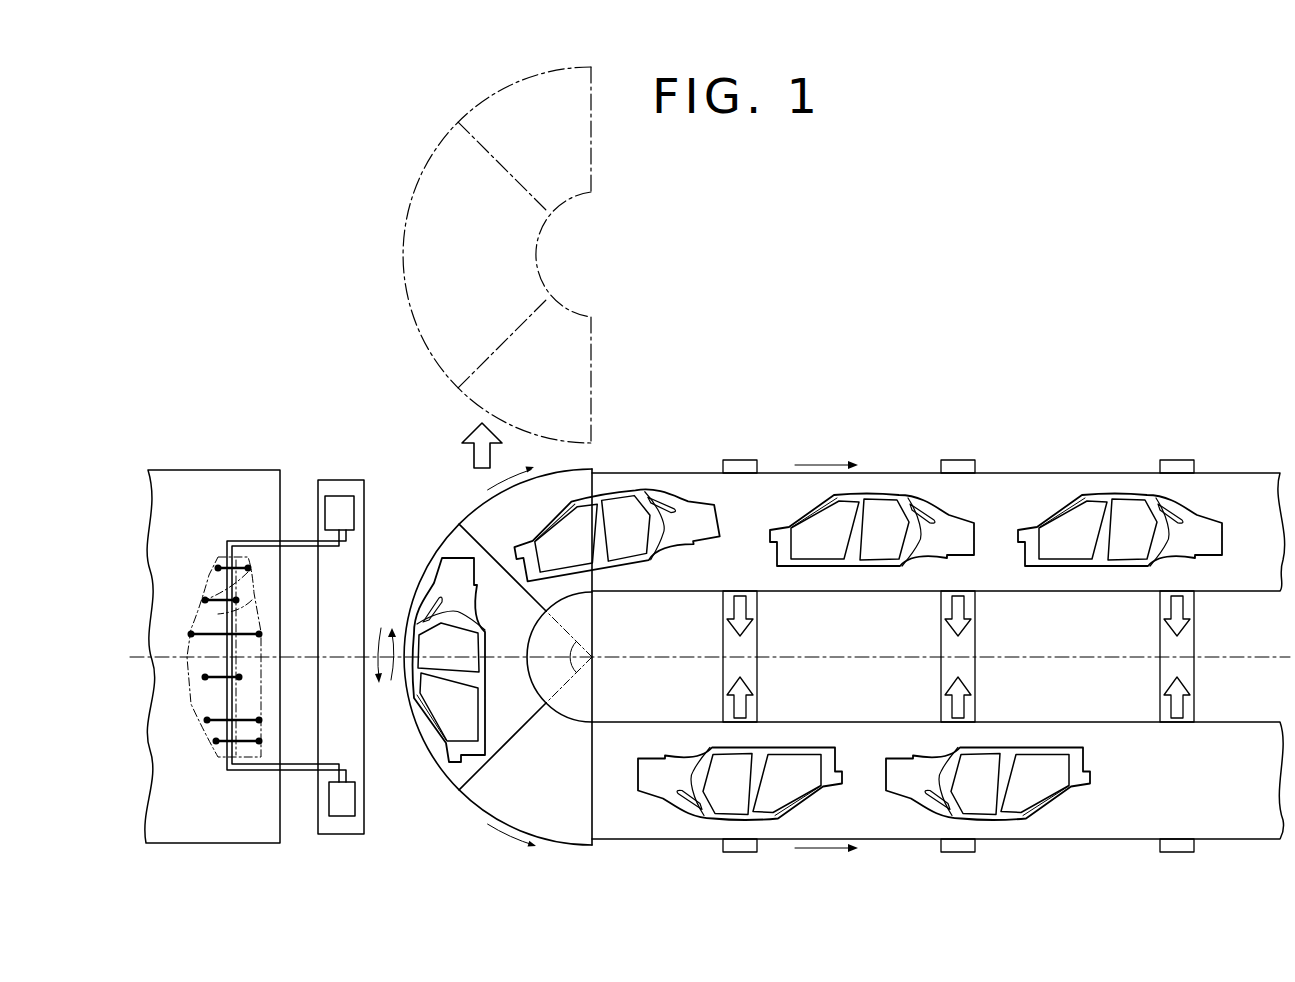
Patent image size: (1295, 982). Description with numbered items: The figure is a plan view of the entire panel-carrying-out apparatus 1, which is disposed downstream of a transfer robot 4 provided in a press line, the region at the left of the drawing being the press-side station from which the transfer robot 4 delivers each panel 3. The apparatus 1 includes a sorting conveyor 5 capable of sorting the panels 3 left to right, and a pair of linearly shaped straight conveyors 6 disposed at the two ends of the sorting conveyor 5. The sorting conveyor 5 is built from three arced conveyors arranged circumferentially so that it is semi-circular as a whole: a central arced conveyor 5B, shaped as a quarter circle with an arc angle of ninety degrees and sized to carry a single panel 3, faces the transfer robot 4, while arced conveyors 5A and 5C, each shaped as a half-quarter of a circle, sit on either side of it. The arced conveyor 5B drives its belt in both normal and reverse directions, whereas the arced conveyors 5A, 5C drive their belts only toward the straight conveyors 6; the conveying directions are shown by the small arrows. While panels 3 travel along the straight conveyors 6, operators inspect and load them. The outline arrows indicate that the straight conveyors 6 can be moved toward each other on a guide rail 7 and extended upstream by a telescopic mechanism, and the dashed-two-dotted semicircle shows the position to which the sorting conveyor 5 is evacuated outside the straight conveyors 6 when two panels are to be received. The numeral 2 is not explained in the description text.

The panel-carrying-out apparatus 1 is at (897, 339).
The processing station 2 is at (222, 480).
The panel 3 is at (188, 691).
The transfer robot 4 is at (340, 485).
The sorting conveyor 5 is at (426, 176).
The arced conveyor 5A is at (578, 482).
The arced conveyor (first conveyor) 5B is at (453, 772).
The arced conveyor 5C is at (570, 831).
The straight conveyor 6 is at (1018, 485).
The guide rail 7 is at (757, 641).